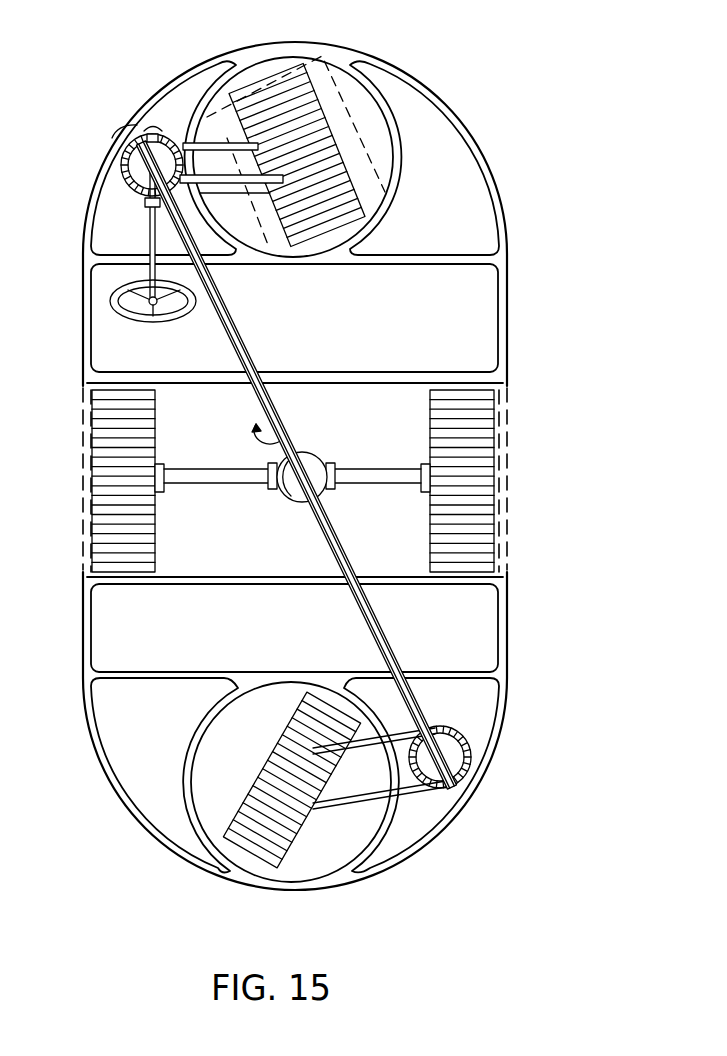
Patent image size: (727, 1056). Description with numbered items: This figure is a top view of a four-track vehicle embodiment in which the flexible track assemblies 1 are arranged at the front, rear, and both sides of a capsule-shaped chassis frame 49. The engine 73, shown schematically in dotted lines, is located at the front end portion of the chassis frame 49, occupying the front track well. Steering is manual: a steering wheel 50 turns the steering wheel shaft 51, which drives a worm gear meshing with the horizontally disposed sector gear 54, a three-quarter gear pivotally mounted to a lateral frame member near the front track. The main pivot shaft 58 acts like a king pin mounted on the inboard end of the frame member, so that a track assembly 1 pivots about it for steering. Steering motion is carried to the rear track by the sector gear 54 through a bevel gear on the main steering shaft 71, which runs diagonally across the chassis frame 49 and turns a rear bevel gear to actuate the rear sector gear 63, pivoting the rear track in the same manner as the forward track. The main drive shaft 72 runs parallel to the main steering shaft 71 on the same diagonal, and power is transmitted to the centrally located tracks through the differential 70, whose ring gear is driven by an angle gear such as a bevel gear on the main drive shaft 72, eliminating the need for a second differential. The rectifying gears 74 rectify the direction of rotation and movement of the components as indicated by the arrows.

The flexible track assembly 1 is at (318, 76).
The chassis frame 49 is at (502, 186).
The steering wheel 50 is at (112, 312).
The steering wheel shaft 51 is at (150, 268).
The sector gear 54 is at (186, 142).
The main pivot shaft 58 is at (360, 780).
The rear sector gear 63 is at (452, 724).
The differential 70 is at (325, 458).
The main steering shaft 71 is at (253, 360).
The main drive shaft 72 is at (250, 402).
The engine 73 is at (343, 112).
The rectifying gears 74 is at (165, 136).